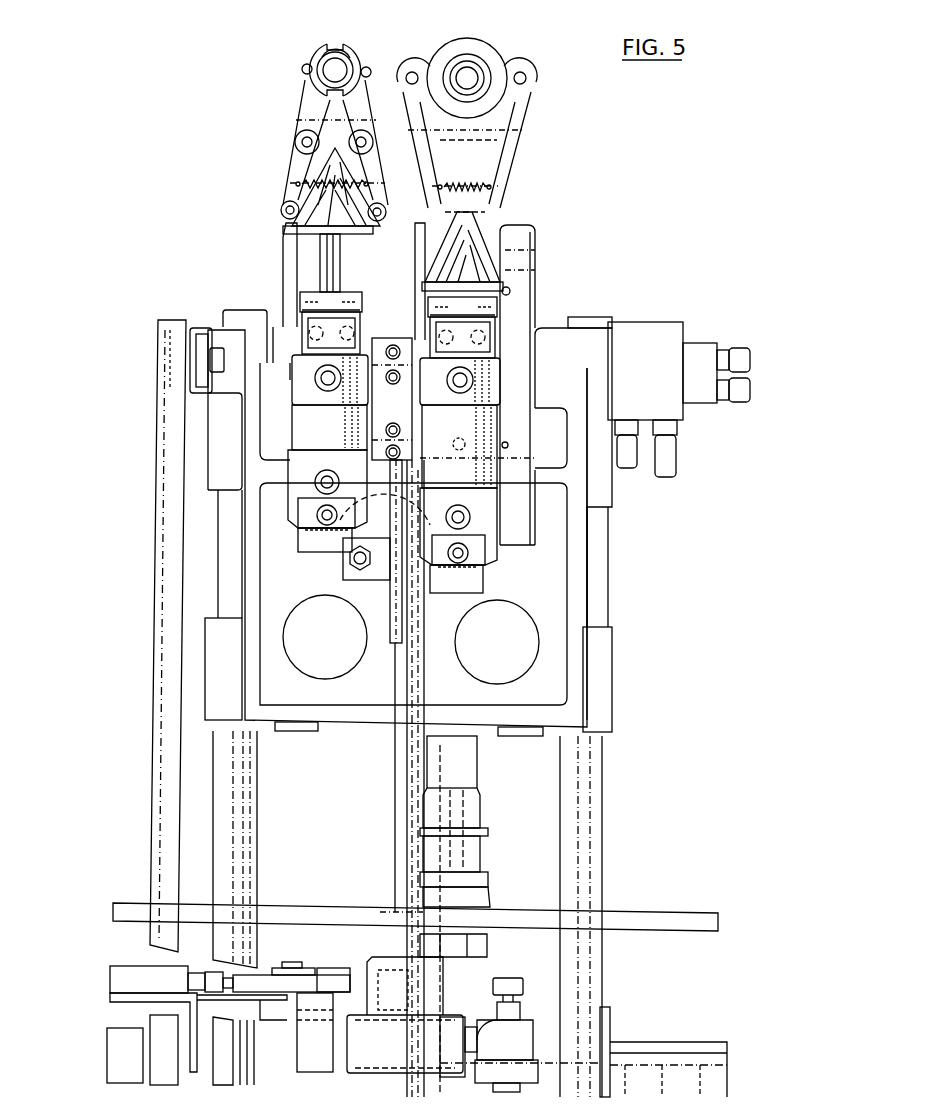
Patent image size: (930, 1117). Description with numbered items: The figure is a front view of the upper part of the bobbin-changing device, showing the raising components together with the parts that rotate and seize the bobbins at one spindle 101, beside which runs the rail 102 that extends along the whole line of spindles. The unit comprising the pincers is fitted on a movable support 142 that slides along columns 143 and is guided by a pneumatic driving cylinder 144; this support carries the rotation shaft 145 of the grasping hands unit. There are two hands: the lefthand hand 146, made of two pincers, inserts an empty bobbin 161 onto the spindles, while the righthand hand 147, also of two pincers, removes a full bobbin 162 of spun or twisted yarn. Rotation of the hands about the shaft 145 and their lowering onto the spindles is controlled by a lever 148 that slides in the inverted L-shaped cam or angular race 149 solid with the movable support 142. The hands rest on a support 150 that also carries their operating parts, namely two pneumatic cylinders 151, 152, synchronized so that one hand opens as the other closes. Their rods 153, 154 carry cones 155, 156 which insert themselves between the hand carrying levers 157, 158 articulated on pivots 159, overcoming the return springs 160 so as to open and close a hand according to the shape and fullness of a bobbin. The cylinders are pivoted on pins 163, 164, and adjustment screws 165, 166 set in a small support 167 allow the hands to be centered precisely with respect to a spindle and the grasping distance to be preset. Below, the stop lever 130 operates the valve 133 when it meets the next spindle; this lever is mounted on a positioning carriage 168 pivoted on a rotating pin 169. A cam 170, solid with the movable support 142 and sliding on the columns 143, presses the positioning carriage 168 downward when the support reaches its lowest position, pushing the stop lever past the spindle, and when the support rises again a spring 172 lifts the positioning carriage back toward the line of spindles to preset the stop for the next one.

The spindle 101 is at (328, 78).
The rail 102 is at (656, 920).
The stop lever 130 is at (250, 984).
The valve 133 is at (150, 975).
The movable support 142 is at (600, 726).
The columns 143 is at (247, 820).
The pneumatic driving cylinder 144 is at (428, 1036).
The rotation shaft 145 is at (172, 333).
The lefthand hand 146 is at (346, 50).
The righthand hand 147 is at (418, 66).
The lever 148 is at (198, 350).
The cam or angular race 149 is at (232, 612).
The support 150 is at (540, 238).
The pneumatic cylinder 151 is at (306, 432).
The pneumatic cylinder 152 is at (488, 432).
The rod 153 is at (330, 262).
The rod 154 is at (510, 290).
The cone 155 is at (348, 230).
The cone 156 is at (472, 258).
The hand carrying lever 157 is at (306, 121).
The hand carrying lever 158 is at (426, 132).
The pivots 159 is at (302, 146).
The return springs 160 is at (284, 208).
The empty bobbin 161 is at (352, 64).
The full bobbin 162 is at (470, 55).
The pin 163 is at (308, 522).
The pin 164 is at (474, 570).
The adjustment screw 165 is at (302, 304).
The adjustment screw 166 is at (356, 304).
The small support 167 is at (345, 300).
The positioning carriage 168 is at (340, 1005).
The rotating pin 169 is at (400, 990).
The cam 170 is at (394, 644).
The spring 172 is at (316, 1040).